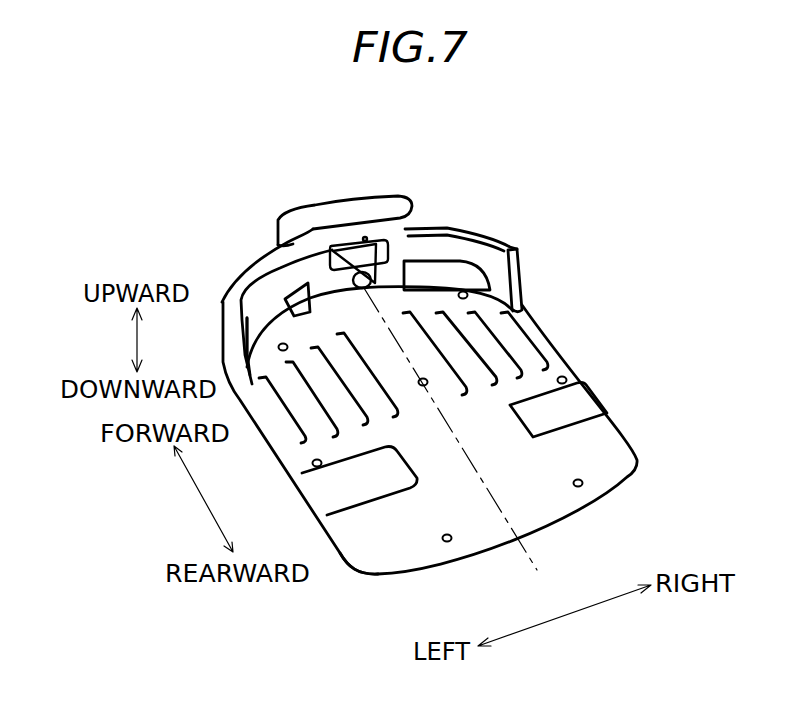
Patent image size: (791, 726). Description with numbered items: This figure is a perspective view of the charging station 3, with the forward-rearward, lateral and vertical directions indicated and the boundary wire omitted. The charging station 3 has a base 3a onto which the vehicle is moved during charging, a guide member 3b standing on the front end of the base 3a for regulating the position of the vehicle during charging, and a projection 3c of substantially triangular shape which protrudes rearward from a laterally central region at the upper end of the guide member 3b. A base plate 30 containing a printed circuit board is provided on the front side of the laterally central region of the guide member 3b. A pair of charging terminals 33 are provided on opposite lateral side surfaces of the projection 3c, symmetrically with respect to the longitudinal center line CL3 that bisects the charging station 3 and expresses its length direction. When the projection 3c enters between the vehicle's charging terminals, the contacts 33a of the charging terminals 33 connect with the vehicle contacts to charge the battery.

The charging station 3 is at (561, 229).
The base 3a is at (372, 553).
The guide member 3b is at (260, 260).
The projection 3c is at (352, 270).
The base plate 30 is at (313, 226).
The charging terminal 33 is at (376, 270).
The contact 33a is at (382, 288).
The center line CL3 is at (463, 448).